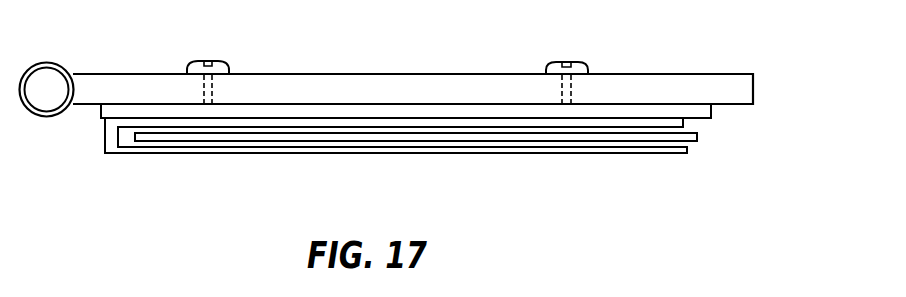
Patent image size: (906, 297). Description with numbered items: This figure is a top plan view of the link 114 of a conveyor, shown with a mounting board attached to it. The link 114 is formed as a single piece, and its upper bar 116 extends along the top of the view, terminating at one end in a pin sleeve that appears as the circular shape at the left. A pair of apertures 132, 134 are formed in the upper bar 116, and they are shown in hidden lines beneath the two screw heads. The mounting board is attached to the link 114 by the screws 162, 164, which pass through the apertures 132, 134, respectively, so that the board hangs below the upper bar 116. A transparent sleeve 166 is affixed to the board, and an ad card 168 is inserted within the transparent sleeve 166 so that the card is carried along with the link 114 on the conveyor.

The link 114 is at (453, 67).
The upper bar 116 is at (330, 83).
The aperture 132 is at (212, 88).
The aperture 134 is at (571, 88).
The screw 162 is at (215, 61).
The screw 164 is at (573, 62).
The transparent sleeve 166 is at (167, 153).
The ad card 168 is at (698, 136).